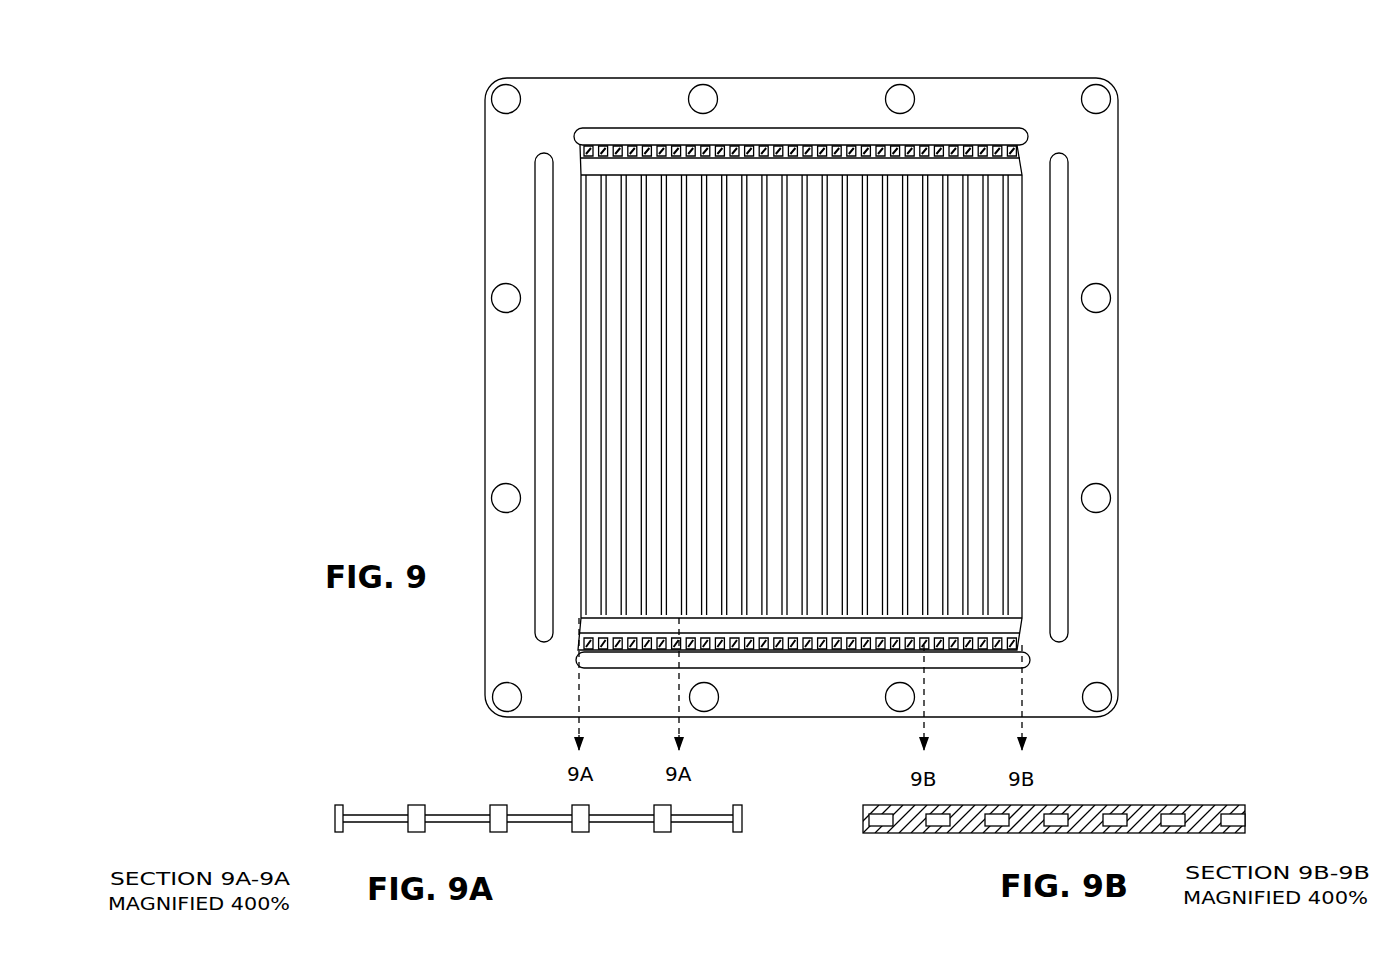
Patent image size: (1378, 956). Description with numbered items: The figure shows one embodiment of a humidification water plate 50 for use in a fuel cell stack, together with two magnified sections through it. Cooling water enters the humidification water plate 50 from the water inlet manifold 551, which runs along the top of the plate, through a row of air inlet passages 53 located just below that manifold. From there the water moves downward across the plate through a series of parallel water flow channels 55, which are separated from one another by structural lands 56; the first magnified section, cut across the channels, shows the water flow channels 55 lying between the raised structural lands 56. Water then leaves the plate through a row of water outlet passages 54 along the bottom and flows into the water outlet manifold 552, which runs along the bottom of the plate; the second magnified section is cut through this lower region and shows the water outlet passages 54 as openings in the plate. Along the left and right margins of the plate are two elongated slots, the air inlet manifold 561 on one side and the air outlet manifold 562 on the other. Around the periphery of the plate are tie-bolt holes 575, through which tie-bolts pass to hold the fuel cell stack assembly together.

In FIG. 9, the humidification water plate 50 is at (800, 77).
In FIG. 9, the tie-bolt holes 575 is at (520, 87).
In FIG. 9, the water inlet manifold 551 is at (833, 135).
In FIG. 9, the water outlet manifold 552 is at (815, 660).
In FIG. 9, the air inlet passages 53 is at (940, 142).
In FIG. 9, the water outlet passages 54 is at (723, 652).
In FIG. 9B, the water outlet passages 54 is at (1063, 812).
In FIG. 9, the air inlet manifold 561 is at (1060, 420).
In FIG. 9, the air outlet manifold 562 is at (546, 425).
In FIG. 9A, the water flow channels 55 is at (688, 823).
In FIG. 9A, the structural lands 56 is at (570, 800).